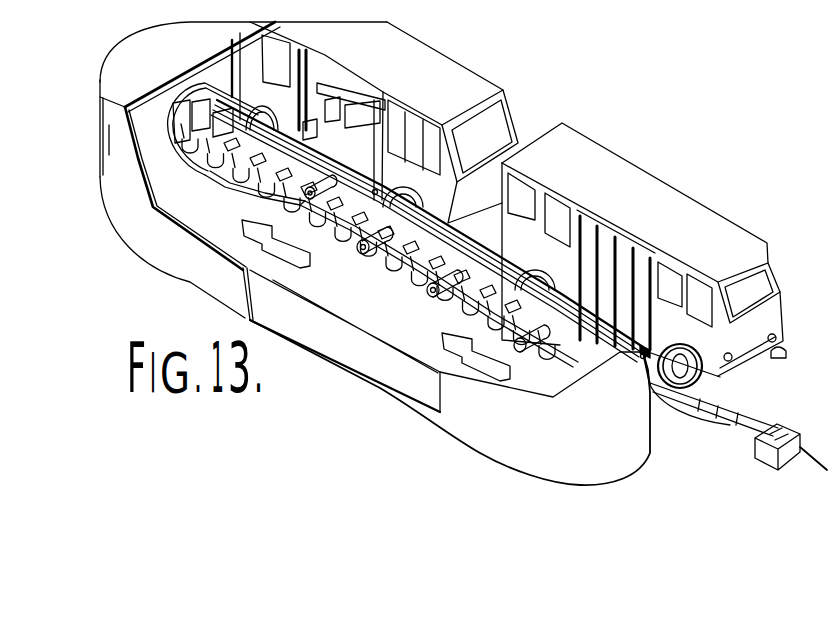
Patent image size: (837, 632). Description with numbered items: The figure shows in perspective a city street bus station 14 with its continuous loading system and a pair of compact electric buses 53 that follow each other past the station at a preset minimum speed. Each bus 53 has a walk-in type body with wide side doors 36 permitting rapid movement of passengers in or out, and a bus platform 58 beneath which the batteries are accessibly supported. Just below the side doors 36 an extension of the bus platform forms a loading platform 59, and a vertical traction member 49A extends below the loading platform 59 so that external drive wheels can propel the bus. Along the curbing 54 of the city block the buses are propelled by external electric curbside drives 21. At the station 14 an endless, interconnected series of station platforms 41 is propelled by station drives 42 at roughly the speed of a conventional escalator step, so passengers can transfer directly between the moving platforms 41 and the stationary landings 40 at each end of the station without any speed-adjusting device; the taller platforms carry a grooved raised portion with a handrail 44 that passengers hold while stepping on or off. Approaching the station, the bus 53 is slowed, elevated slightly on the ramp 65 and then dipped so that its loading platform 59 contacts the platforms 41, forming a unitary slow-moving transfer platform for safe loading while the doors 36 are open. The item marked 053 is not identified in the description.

The station 14 is at (380, 407).
The drive 21 is at (757, 450).
The side door 36 is at (308, 65).
The landing 40 is at (295, 165).
The platform 41 is at (340, 182).
The station drive 42 is at (362, 270).
The handrail 44 is at (233, 110).
The vertical traction member 49A is at (506, 268).
The bus 53 is at (475, 82).
The curbing 54 is at (827, 468).
The bus platform 58 is at (304, 150).
The loading platform 59 is at (377, 190).
The ramp 65 is at (723, 398).
The hitch 053 is at (787, 343).